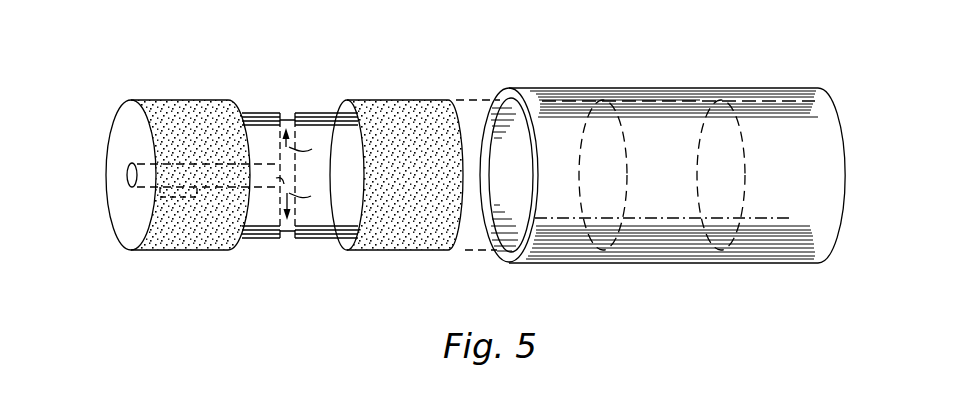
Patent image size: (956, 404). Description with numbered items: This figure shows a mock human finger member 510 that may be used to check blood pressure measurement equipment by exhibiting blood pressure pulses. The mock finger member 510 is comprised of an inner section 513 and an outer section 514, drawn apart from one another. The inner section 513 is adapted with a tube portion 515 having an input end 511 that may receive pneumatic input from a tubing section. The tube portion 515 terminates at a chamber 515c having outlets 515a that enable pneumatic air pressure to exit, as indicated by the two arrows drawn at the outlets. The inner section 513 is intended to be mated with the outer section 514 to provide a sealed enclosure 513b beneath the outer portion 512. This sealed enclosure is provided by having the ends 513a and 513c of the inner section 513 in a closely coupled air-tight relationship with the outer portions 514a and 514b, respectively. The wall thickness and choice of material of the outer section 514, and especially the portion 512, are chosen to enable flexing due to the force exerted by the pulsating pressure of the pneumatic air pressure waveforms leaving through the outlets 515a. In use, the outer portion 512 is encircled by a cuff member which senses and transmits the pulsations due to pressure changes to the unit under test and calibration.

The mock human finger member 510 is at (450, 167).
The input end 511 is at (130, 181).
The outer portion 512 is at (657, 97).
The inner section 513 is at (251, 174).
The end of inner section 513a is at (172, 118).
The sealed enclosure 513b is at (327, 105).
The end of inner section 513c is at (390, 100).
The outer section 514 is at (671, 154).
The outer portion 514a is at (560, 100).
The outer portion 514b is at (772, 98).
The tube portion 515 is at (198, 248).
The outlets 515a is at (281, 117).
The chamber 515c is at (283, 181).